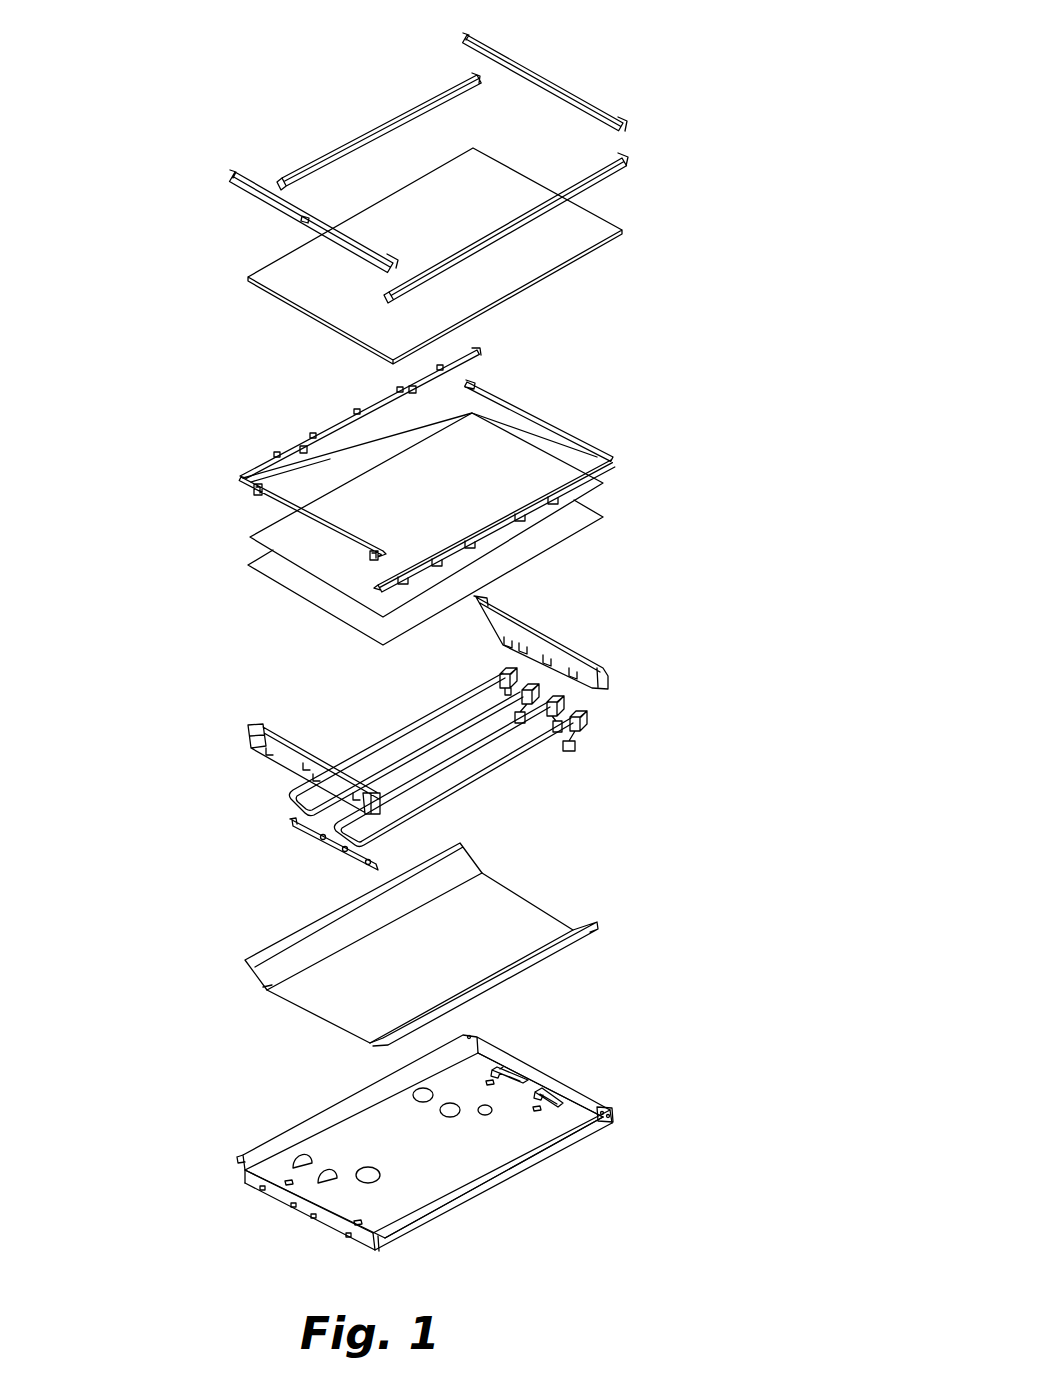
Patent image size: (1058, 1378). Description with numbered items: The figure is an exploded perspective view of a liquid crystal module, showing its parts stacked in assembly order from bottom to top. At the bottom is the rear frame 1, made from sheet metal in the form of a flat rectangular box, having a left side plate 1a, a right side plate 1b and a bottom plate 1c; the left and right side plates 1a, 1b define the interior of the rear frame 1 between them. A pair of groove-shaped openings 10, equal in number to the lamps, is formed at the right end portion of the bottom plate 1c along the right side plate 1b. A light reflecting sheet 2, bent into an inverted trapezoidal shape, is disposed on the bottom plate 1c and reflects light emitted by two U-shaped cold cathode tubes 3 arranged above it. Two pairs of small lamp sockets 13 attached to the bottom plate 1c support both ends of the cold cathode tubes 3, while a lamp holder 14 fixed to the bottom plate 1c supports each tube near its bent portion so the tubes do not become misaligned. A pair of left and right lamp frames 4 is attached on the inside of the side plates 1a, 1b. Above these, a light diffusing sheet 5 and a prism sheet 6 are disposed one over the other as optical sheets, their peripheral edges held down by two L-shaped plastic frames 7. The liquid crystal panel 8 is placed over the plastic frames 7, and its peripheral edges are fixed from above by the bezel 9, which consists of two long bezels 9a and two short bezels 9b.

The rear frame 1 is at (450, 1130).
The left side plate 1a is at (300, 1213).
The right side plate 1b is at (570, 1056).
The bottom plate 1c is at (350, 1145).
The light reflecting sheet 2 is at (513, 912).
The cold cathode tubes 3 is at (410, 727).
The lamp frames 4 is at (558, 645).
The light diffusing sheet 5 is at (287, 578).
The prism sheet 6 is at (267, 540).
The L-shaped plastic frames 7 is at (338, 427).
The liquid crystal panel 8 is at (535, 262).
The bezel 9 is at (514, 157).
The long bezels 9a is at (360, 138).
The short bezels 9b is at (548, 82).
The groove-shaped openings 10 is at (510, 1060).
The lamp sockets 13 is at (503, 672).
The lamp holder 14 is at (323, 843).